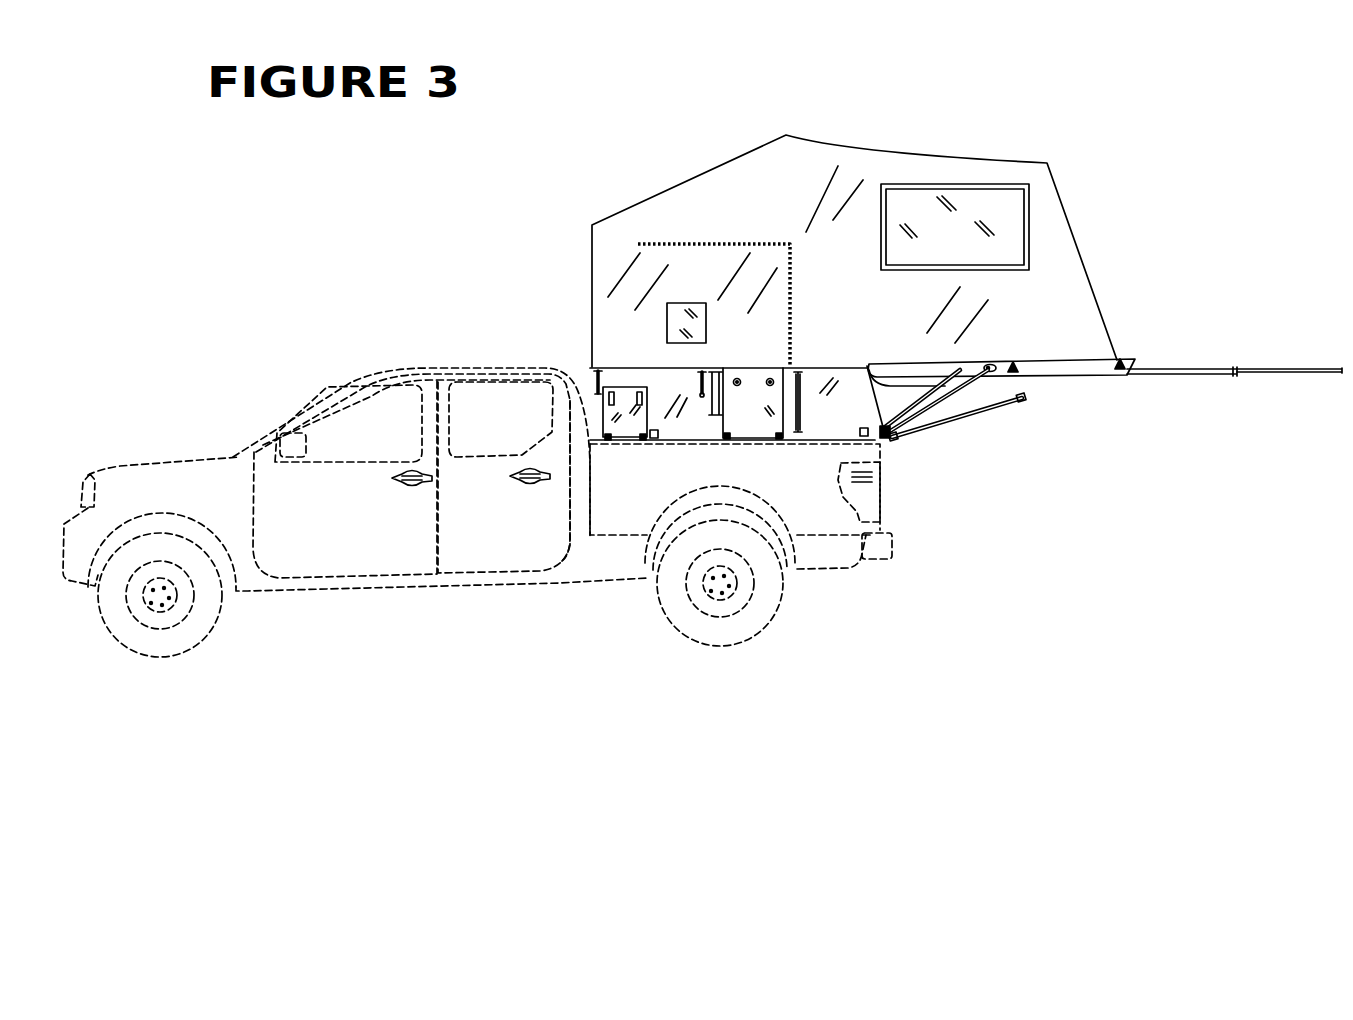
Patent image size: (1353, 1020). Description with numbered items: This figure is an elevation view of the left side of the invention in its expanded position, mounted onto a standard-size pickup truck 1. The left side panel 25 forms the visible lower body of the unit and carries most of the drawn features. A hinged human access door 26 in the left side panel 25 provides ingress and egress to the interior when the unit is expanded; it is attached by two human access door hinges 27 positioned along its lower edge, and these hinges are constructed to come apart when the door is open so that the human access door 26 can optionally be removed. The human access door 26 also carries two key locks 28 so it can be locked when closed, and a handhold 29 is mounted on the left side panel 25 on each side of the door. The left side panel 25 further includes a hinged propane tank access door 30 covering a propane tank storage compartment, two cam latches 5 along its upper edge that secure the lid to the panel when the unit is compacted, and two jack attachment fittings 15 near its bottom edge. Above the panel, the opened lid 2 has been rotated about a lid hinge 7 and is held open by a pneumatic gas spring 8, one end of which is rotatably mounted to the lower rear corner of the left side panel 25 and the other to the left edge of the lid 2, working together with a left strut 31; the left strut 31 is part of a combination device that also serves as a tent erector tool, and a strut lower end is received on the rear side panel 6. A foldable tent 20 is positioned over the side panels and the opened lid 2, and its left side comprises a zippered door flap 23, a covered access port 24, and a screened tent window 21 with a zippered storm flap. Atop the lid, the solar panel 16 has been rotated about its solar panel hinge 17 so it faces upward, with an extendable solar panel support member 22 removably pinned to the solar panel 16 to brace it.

The pickup truck 1 is at (158, 480).
The lid 2 is at (1070, 367).
The cam latch 5 is at (608, 373).
The rear side panel 6 is at (950, 415).
The lid hinge 7 is at (963, 410).
The pneumatic gas spring 8 is at (935, 402).
The jack attachment fitting 15 is at (653, 440).
The solar panel 16 is at (1313, 370).
The solar panel hinge 17 is at (1122, 374).
The tent 20 is at (885, 322).
The tent window 21 is at (977, 203).
The solar panel support member 22 is at (1200, 370).
The zippered door flap 23 is at (698, 243).
The access port 24 is at (667, 326).
The left side panel 25 is at (880, 452).
The human access door 26 is at (650, 438).
The human access door hinge 27 is at (737, 386).
The key lock 28 is at (770, 386).
The handhold 29 is at (716, 416).
The propane tank access door 30 is at (608, 412).
The left strut 31 is at (985, 377).